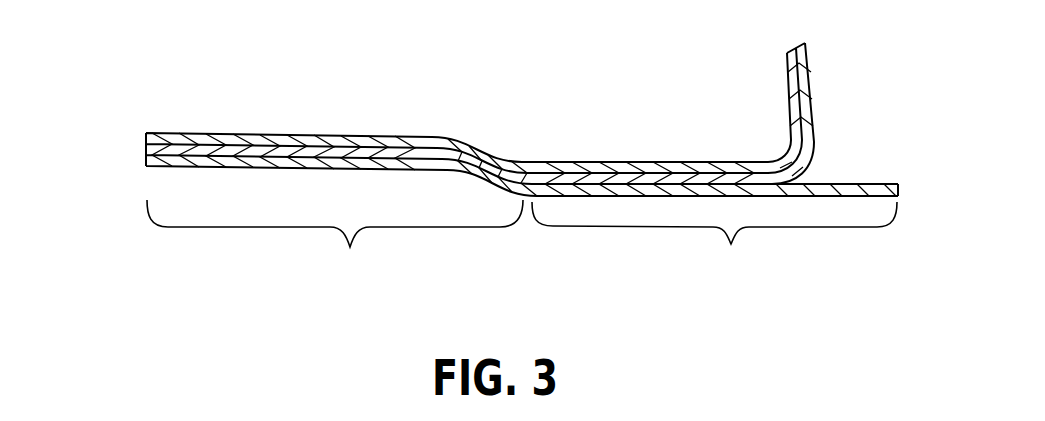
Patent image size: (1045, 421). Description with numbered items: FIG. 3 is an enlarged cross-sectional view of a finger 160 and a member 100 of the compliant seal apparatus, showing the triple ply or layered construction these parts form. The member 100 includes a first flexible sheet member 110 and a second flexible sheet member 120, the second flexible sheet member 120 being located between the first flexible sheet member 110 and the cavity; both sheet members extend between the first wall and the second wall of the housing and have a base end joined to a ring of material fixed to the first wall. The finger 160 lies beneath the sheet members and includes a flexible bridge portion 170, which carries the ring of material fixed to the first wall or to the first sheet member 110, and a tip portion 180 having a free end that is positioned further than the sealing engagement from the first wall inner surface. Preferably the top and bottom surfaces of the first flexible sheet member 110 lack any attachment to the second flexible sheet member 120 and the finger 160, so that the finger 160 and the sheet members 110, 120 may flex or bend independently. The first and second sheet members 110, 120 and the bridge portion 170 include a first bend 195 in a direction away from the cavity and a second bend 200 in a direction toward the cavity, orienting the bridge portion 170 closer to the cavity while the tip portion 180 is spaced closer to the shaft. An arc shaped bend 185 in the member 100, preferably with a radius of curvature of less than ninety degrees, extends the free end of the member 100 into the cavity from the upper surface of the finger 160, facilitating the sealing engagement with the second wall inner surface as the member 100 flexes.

The member 100 is at (818, 66).
The first flexible sheet member 110 is at (147, 146).
The second flexible sheet member 120 is at (167, 134).
The finger 160 is at (812, 190).
The flexible bridge portion 170 is at (335, 241).
The tip portion 180 is at (714, 243).
The arc shaped bend 185 is at (785, 114).
The first bend 195 is at (412, 174).
The second bend 200 is at (552, 155).